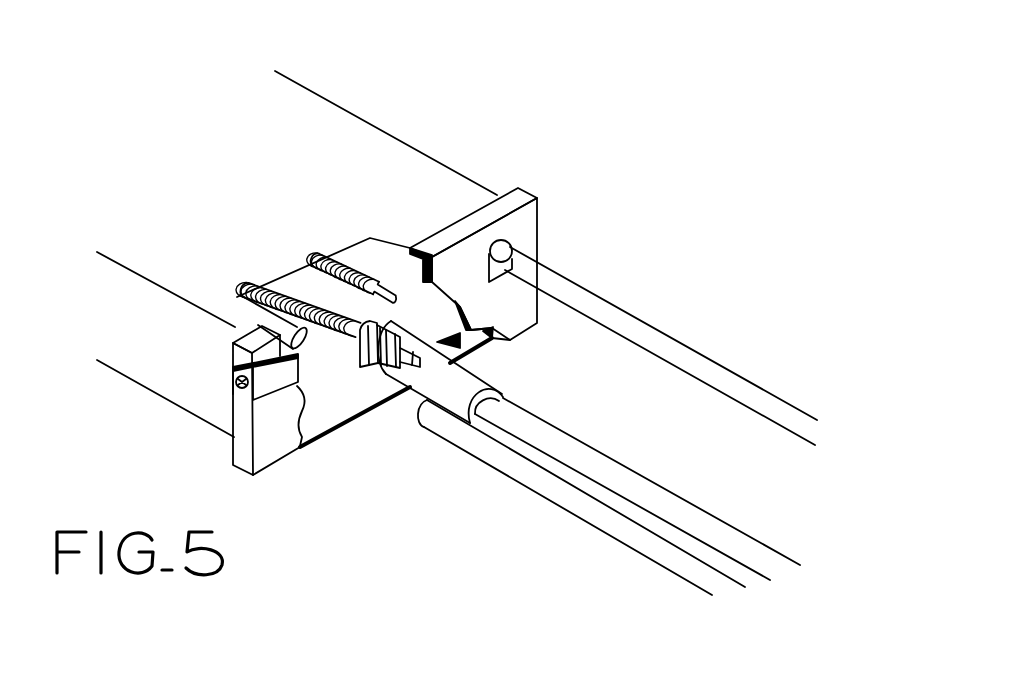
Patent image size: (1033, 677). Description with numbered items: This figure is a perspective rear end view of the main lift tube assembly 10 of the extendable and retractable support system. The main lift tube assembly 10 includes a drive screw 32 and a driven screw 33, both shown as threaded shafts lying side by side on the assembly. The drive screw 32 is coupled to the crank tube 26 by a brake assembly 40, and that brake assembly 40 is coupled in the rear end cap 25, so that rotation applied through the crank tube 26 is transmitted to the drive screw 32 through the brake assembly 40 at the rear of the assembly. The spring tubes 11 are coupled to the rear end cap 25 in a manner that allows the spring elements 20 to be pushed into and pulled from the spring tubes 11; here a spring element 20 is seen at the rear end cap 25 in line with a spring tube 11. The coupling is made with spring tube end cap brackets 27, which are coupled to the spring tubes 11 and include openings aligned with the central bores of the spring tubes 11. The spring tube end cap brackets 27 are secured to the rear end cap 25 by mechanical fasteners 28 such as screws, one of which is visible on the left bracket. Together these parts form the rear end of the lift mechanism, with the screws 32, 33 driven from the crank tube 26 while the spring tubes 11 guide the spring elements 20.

The main lift tube assembly 10 is at (386, 212).
The spring tube 11 is at (446, 586).
The spring element 20 is at (240, 303).
The rear end cap 25 is at (530, 197).
The crank tube 26 is at (692, 522).
The spring tube end cap bracket 27 is at (511, 241).
The mechanical fastener 28 is at (233, 381).
The drive screw 32 is at (336, 332).
The driven screw 33 is at (349, 250).
The brake assembly 40 is at (460, 340).